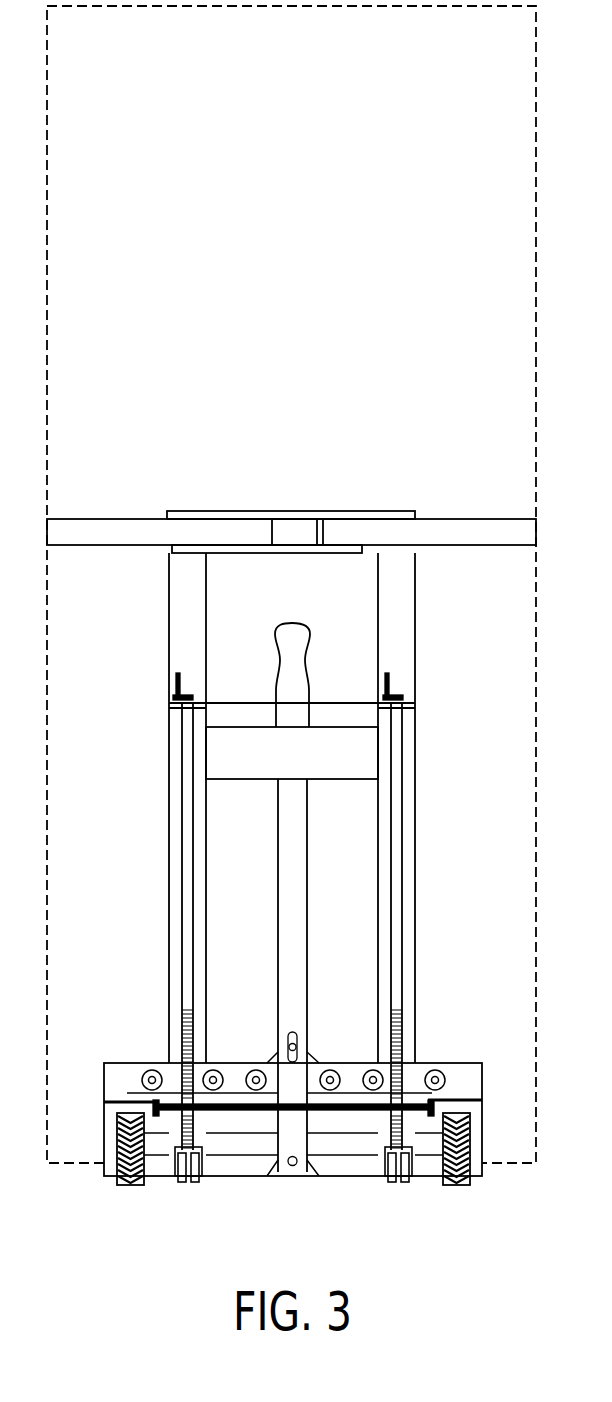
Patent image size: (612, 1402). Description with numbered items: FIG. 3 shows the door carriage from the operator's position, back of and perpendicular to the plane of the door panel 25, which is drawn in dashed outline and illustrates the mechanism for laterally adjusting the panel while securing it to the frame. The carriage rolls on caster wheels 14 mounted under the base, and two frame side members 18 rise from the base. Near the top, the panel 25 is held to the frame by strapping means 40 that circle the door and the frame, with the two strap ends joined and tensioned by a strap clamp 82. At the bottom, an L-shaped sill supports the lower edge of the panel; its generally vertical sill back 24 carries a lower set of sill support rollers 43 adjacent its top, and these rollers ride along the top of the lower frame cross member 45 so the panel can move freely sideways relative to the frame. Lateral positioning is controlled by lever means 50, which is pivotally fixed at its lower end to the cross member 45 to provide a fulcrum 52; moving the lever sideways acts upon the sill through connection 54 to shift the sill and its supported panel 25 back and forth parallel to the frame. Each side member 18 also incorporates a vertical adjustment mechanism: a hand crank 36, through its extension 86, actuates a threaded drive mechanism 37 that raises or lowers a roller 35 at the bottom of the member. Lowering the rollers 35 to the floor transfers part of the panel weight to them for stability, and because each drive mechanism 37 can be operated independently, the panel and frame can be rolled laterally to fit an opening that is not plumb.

The door panel 25 is at (298, 236).
The strapping means 40 is at (487, 528).
The strap clamp 82 is at (292, 532).
The frame side member 18 is at (183, 613).
The lever means 50 is at (292, 830).
The connection 54 is at (297, 1047).
The fulcrum 52 is at (291, 1167).
The extension of hand crank 86 is at (186, 880).
The hand crank 36 is at (173, 690).
The threaded drive mechanism 37 is at (183, 1055).
The sill back 24 is at (477, 1137).
The sill support rollers 43 is at (442, 1085).
The lower frame cross member 45 is at (452, 1095).
The caster wheels 14 is at (124, 1185).
The roller 35 is at (196, 1183).